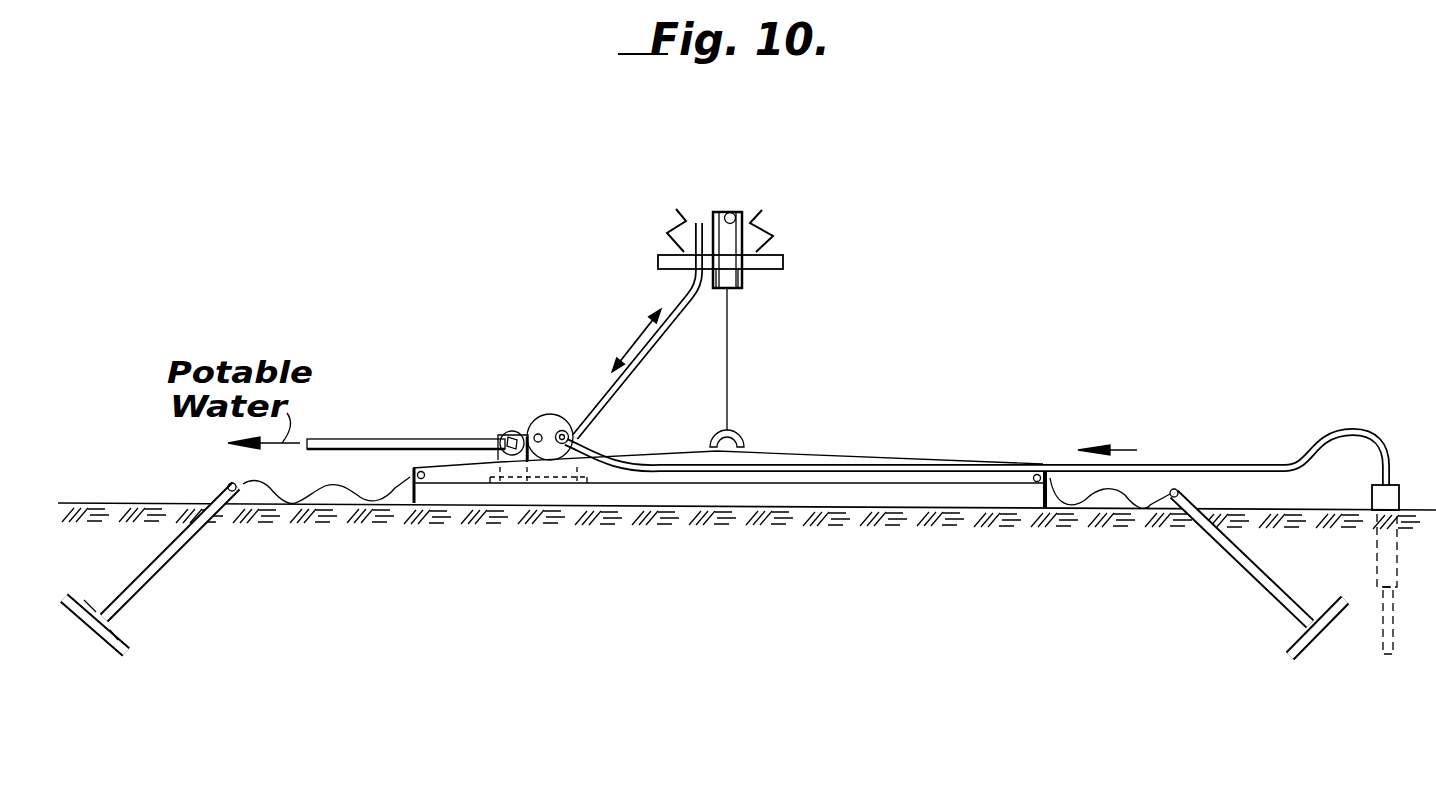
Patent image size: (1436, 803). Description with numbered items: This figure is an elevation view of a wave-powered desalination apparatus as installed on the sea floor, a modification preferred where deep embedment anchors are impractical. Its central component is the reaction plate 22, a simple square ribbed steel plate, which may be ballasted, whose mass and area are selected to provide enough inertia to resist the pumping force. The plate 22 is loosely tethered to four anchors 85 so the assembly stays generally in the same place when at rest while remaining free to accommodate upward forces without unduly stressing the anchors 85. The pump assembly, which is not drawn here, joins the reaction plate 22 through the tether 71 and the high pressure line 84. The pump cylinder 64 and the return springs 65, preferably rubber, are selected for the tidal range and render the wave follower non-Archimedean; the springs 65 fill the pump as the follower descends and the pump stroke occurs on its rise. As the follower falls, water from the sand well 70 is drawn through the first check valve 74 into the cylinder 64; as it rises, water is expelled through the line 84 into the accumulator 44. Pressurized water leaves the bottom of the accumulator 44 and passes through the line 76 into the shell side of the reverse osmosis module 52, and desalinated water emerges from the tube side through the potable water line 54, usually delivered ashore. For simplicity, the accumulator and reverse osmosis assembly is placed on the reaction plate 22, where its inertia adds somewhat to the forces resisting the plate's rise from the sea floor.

The reaction plate 22 is at (968, 498).
The accumulator 44 is at (551, 431).
The reverse osmosis module 52 is at (512, 432).
The potable water line 54 is at (417, 418).
The pump cylinder 64 is at (737, 216).
The return springs 65 is at (775, 230).
The sand well 70 is at (1377, 575).
The tether 71 is at (730, 365).
The first check valve 74 is at (568, 432).
The line 76 is at (524, 433).
The high pressure line 84 is at (645, 365).
The anchors 85 is at (1283, 668).